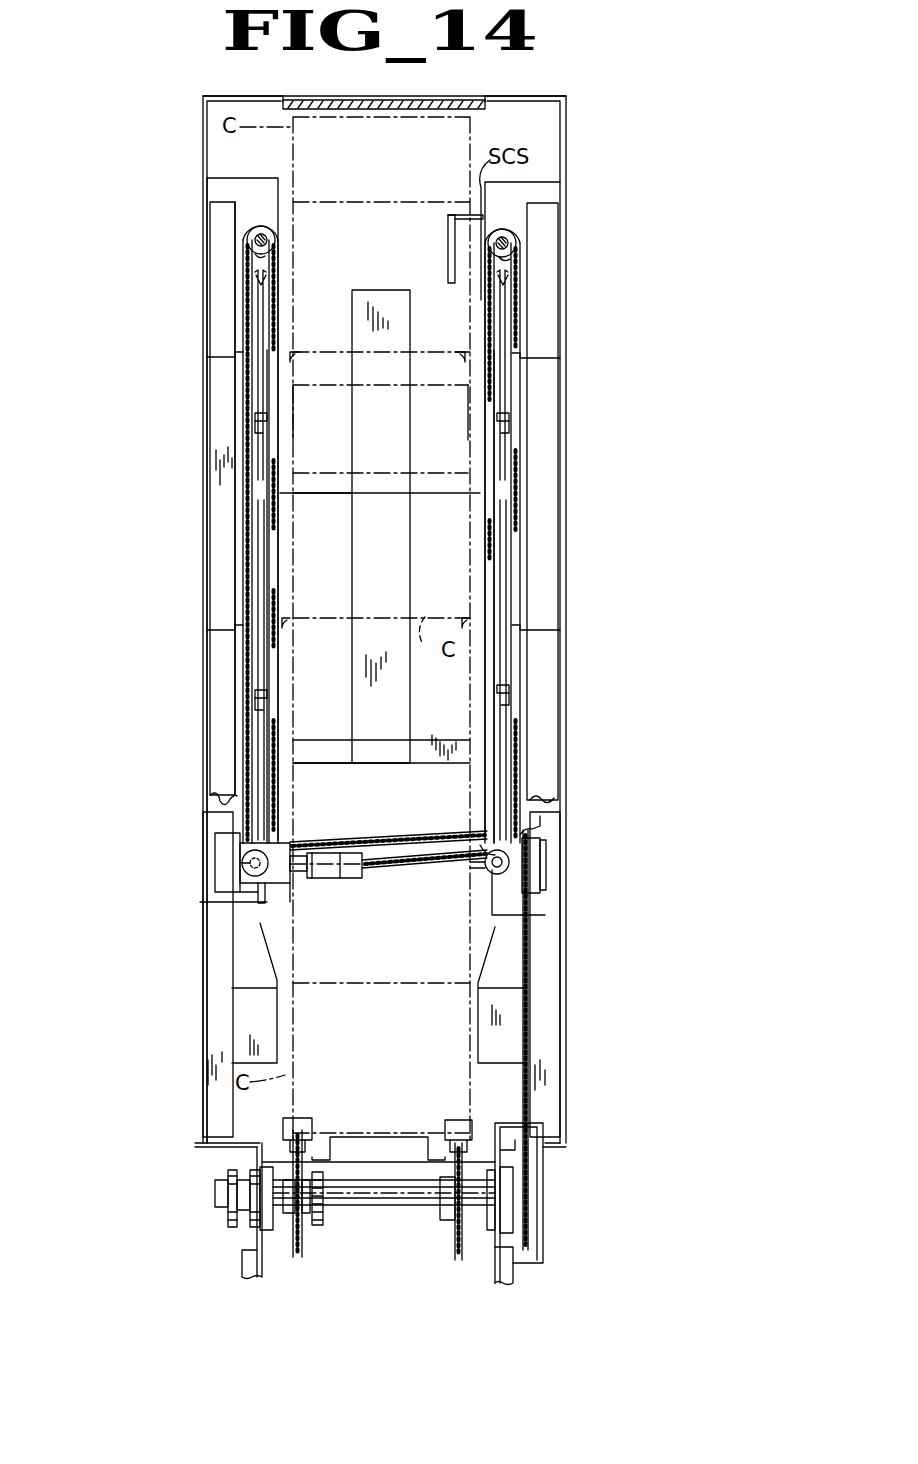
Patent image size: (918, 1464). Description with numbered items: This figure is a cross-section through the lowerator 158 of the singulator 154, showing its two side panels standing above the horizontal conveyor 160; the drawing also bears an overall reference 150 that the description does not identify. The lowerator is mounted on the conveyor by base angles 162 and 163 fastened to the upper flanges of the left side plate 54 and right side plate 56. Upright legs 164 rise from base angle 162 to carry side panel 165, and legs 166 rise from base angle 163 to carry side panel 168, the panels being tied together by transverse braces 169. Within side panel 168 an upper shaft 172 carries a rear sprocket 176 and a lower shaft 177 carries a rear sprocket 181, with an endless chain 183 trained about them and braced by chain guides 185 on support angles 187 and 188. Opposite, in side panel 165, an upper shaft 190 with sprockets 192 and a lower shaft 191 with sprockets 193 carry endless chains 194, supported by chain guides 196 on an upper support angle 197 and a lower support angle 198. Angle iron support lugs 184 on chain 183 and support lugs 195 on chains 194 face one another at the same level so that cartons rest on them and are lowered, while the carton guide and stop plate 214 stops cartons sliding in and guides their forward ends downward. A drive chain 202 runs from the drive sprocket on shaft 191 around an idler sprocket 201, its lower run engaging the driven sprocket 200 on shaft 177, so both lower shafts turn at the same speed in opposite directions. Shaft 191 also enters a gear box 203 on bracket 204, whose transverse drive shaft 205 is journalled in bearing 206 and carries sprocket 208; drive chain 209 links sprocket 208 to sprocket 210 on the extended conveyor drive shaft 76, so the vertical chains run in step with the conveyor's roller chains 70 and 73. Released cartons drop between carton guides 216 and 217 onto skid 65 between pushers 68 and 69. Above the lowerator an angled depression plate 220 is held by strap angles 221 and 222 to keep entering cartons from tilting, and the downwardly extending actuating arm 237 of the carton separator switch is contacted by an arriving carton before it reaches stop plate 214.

The apparatus 150 is at (70, 418).
The singulator 154 is at (158, 392).
The lowerator 158 is at (168, 437).
The horizontal conveyor 160 is at (185, 1245).
The base angle 162 is at (203, 1125).
The base angle 163 is at (562, 1122).
The legs 164 is at (222, 567).
The side panel 165 is at (206, 590).
The legs 166 is at (545, 590).
The side panel 168 is at (562, 463).
The transverse braces 169 is at (305, 500).
The upper shaft 172 is at (508, 237).
The rear sprocket 176 is at (507, 256).
The lower shaft 177 is at (465, 875).
The rear sprocket 181 is at (487, 848).
The endless chain 183 is at (485, 318).
The support lugs 184 is at (560, 357).
The chain guides 185 is at (515, 548).
The support angle 187 is at (497, 423).
The support angle 188 is at (508, 688).
The upper shaft 190 is at (256, 238).
The lower shaft 191 is at (243, 860).
The sprockets 192 is at (260, 253).
The sprockets 193 is at (248, 840).
The endless chains 194 is at (243, 278).
The support lugs 195 is at (207, 357).
The chain guides 196 is at (269, 543).
The upper support angle 197 is at (267, 420).
The lower support angle 198 is at (267, 697).
The driven sprocket 200 is at (485, 878).
The idler sprocket 201 is at (525, 813).
The drive chain 202 is at (310, 848).
The gear box 203 is at (289, 905).
The bracket 204 is at (232, 872).
The drive shaft 205 is at (368, 875).
The bearing 206 is at (540, 888).
The sprocket 208 is at (525, 865).
The drive chain 209 is at (530, 955).
The sprocket 210 is at (513, 1208).
The carton guide and stop plate 214 is at (396, 571).
The carton guide plate 216 is at (486, 947).
The carton guide 217 is at (270, 935).
The angled depression plate 220 is at (320, 98).
The strap angle 221 is at (566, 137).
The strap angle 222 is at (203, 137).
The actuating arm 237 is at (448, 240).
The left side plate 54 is at (257, 1160).
The right side plate 56 is at (500, 1162).
The skid 65 is at (371, 1129).
The pushers 68 is at (285, 1130).
The pushers 69 is at (458, 1118).
The endless roller chain 70 is at (295, 1257).
The endless roller chain 73 is at (455, 1263).
The drive shaft 76 is at (372, 1212).